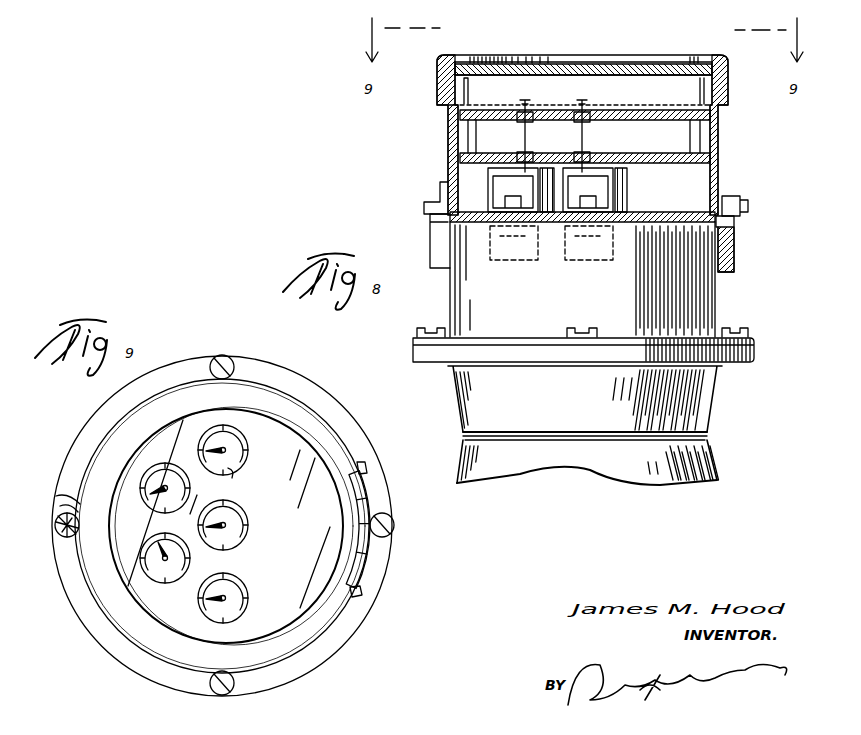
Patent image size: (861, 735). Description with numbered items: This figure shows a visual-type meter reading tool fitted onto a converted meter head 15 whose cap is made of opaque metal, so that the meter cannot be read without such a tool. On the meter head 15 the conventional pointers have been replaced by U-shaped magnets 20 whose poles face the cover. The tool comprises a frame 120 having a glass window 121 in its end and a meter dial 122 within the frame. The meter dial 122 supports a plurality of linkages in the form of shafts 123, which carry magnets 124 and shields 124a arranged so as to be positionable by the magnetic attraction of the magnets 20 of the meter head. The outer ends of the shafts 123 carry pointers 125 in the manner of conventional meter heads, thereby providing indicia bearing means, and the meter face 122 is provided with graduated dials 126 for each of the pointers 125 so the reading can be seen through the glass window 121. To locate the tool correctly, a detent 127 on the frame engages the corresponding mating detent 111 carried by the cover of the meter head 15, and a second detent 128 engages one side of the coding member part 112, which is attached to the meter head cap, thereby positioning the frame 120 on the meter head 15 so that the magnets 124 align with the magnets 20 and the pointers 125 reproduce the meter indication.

In FIG. 8, the meter head 15 is at (730, 370).
In FIG. 9, the meter head 15 is at (340, 660).
In FIG. 8, the magnets 20 is at (498, 256).
In FIG. 8, the mating detent 111 is at (430, 228).
In FIG. 9, the mating detent 111 is at (56, 497).
In FIG. 8, the coding member part 112 is at (736, 246).
In FIG. 9, the coding member part 112 is at (394, 532).
In FIG. 8, the frame 120 is at (720, 135).
In FIG. 8, the glass window 121 is at (595, 75).
In FIG. 8, the meter dial 122 is at (630, 112).
In FIG. 8, the shafts 123 is at (595, 130).
In FIG. 9, the shafts 123 is at (232, 458).
In FIG. 8, the magnets 124 is at (618, 184).
In FIG. 8, the shields 124a is at (627, 200).
In FIG. 8, the pointers 125 is at (505, 100).
In FIG. 9, the pointers 125 is at (226, 448).
In FIG. 9, the graduated dials 126 is at (234, 472).
In FIG. 8, the detent 127 is at (440, 190).
In FIG. 9, the detent 127 is at (66, 538).
In FIG. 8, the second detent 128 is at (750, 206).
In FIG. 9, the second detent 128 is at (363, 462).